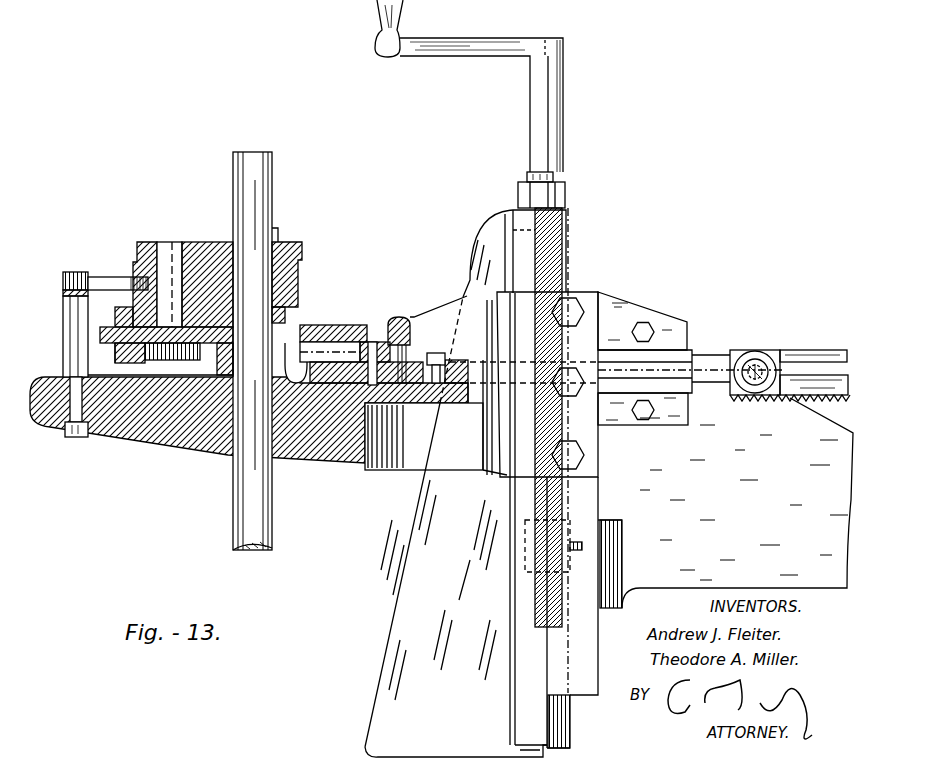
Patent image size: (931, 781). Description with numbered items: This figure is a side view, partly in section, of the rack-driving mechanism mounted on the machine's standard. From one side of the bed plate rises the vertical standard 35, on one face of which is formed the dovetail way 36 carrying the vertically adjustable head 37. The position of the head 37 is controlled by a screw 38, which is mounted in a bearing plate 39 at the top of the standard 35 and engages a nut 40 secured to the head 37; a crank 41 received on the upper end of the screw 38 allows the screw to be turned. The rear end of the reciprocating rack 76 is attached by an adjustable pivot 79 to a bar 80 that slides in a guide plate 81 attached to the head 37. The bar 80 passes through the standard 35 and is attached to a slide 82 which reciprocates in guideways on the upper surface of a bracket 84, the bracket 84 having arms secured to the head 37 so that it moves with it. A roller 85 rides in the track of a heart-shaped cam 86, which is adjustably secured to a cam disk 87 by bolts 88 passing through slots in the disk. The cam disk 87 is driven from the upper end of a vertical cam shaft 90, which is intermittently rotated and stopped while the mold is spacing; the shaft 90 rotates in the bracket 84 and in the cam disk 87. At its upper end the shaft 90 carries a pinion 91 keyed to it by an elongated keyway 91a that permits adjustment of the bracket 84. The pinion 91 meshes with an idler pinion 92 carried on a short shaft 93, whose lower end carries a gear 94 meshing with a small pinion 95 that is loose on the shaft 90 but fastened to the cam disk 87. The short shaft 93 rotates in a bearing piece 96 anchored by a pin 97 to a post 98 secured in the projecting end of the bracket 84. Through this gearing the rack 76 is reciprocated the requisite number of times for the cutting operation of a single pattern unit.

The vertical standard 35 is at (497, 742).
The dovetail way 36 is at (573, 712).
The vertically adjustable head 37 is at (808, 432).
The screw 38 is at (568, 292).
The bearing plate 39 is at (566, 192).
The nut 40 is at (525, 566).
The crank 41 is at (457, 44).
The reciprocating rack 76 is at (794, 358).
The adjustable pivot 79 is at (753, 366).
The bar 80 is at (703, 368).
The guide plate 81 is at (668, 332).
The slide 82 is at (415, 360).
The bracket 84 is at (355, 462).
The roller 85 is at (382, 340).
The heart-shaped cam 86 is at (377, 340).
The cam disk 87 is at (348, 325).
The bolts 88 is at (127, 345).
The vertical cam shaft 90 is at (263, 493).
The pinion 91 is at (283, 243).
The elongated keyway 91a is at (275, 226).
The idler pinion 92 is at (190, 242).
The short shaft 93 is at (170, 243).
The gear 94 is at (117, 313).
The small pinion 95 is at (286, 314).
The bearing piece 96 is at (133, 267).
The pin 97 is at (100, 283).
The post 98 is at (63, 318).